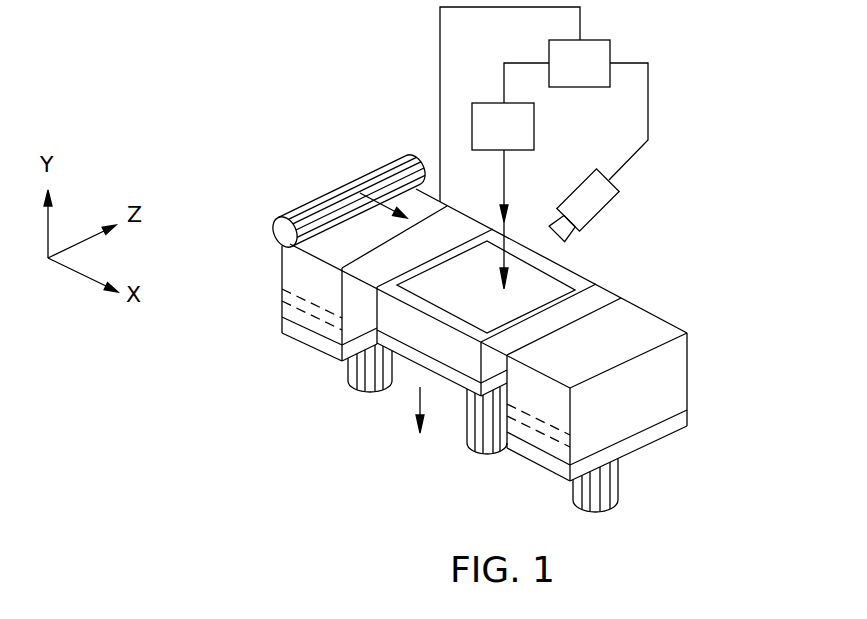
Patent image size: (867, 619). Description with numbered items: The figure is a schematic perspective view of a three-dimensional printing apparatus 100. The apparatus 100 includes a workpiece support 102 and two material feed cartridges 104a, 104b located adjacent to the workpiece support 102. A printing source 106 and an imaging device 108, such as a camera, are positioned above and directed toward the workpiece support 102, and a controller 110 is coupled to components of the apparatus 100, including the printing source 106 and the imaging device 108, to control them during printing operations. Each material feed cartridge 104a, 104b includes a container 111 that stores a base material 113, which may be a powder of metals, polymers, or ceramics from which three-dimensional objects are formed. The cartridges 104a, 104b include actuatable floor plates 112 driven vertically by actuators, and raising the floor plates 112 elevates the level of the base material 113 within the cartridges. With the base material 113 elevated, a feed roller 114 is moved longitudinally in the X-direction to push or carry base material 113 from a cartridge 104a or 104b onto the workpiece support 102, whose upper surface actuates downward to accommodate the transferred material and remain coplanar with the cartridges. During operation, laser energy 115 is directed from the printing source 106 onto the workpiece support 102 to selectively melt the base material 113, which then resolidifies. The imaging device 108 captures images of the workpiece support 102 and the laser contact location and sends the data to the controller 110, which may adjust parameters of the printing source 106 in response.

The 3D printing apparatus 100 is at (262, 62).
The workpiece support 102 is at (433, 344).
The material feed cartridge 104a is at (706, 374).
The material feed cartridge 104b is at (285, 318).
The printing source 106 is at (521, 141).
The imaging device 108 is at (586, 182).
The controller 110 is at (597, 78).
The container 111 is at (312, 303).
The actuatable floor plate 112 is at (300, 308).
The base material 113 is at (381, 244).
The feed roller 114 is at (393, 157).
The laser energy 115 is at (506, 203).